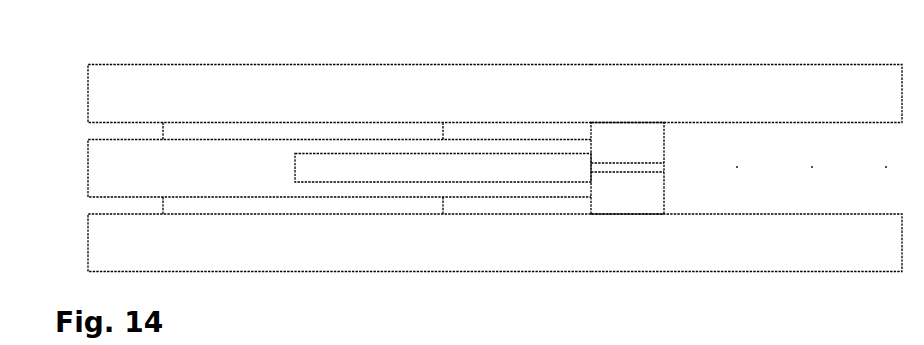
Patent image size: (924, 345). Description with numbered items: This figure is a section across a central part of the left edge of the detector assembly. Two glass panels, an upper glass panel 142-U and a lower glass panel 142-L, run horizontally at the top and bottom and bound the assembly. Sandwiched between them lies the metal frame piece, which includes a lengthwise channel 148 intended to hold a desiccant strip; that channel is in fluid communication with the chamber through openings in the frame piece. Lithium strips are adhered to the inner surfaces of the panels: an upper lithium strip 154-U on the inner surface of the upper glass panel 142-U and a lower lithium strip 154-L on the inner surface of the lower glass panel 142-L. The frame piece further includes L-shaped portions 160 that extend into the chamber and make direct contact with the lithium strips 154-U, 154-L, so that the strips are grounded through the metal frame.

The upper glass panel 142-U is at (190, 73).
The lower glass panel 142-L is at (203, 260).
The lengthwise channel 148 is at (478, 165).
The L-shaped portion 160 is at (631, 133).
The upper lithium strip 154-U is at (735, 122).
The lower lithium strip 154-L is at (763, 214).